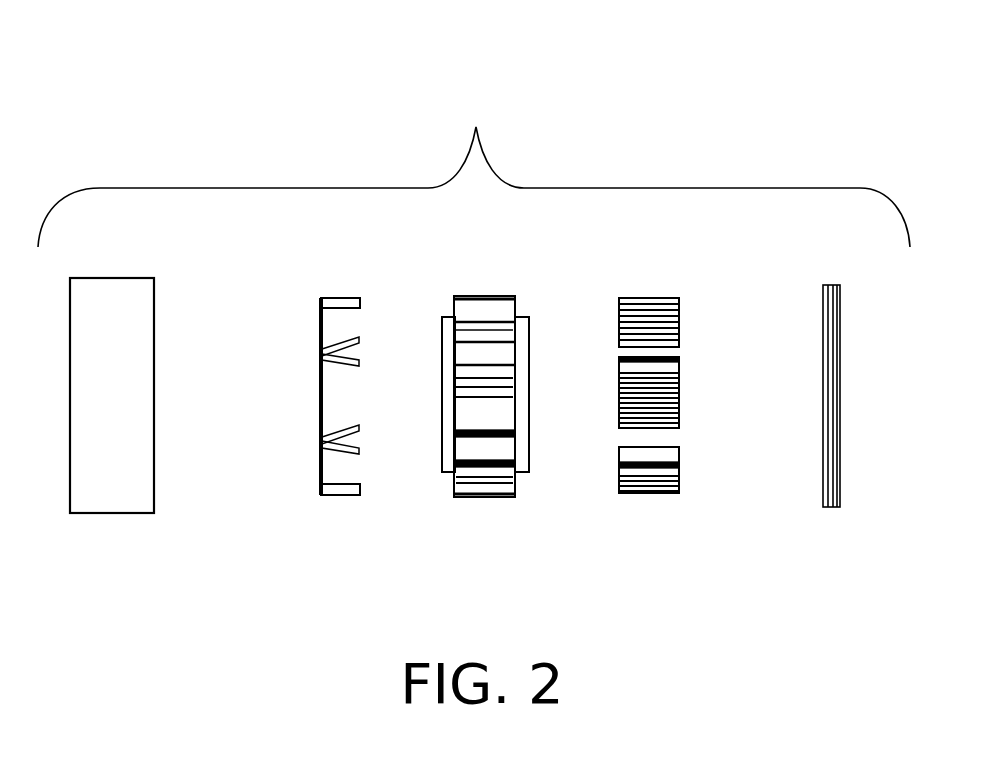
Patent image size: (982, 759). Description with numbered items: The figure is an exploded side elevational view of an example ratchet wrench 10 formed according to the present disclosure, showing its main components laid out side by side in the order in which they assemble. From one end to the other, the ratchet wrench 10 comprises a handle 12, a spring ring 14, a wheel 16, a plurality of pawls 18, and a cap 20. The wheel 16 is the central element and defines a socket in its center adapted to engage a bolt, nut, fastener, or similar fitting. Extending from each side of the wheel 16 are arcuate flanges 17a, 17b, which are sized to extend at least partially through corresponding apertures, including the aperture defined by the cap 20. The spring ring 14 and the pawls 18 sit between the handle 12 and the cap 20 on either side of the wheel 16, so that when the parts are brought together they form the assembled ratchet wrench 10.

The ratchet wrench 10 is at (472, 114).
The handle 12 is at (88, 284).
The spring ring 14 is at (318, 316).
The wheel 16 is at (487, 399).
The arcuate flange 17a is at (527, 470).
The arcuate flange 17b is at (445, 470).
The pawls 18 is at (645, 297).
The cap 20 is at (830, 285).